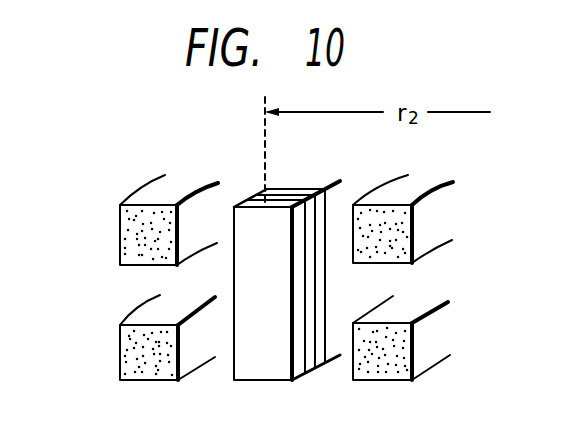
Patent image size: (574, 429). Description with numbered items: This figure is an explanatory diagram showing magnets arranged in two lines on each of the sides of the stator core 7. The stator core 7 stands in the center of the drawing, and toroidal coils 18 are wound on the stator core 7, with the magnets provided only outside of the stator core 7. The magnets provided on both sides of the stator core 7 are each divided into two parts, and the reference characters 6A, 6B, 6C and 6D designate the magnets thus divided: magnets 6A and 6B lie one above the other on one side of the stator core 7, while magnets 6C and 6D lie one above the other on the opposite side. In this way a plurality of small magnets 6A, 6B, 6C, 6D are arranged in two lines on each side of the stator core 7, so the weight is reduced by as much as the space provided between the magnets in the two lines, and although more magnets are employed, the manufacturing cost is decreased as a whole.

The magnet 6A is at (122, 238).
The magnet 6B is at (122, 358).
The magnet 6C is at (407, 230).
The magnet 6D is at (405, 350).
The stator core 7 is at (238, 358).
The toroidal coils 18 is at (290, 182).